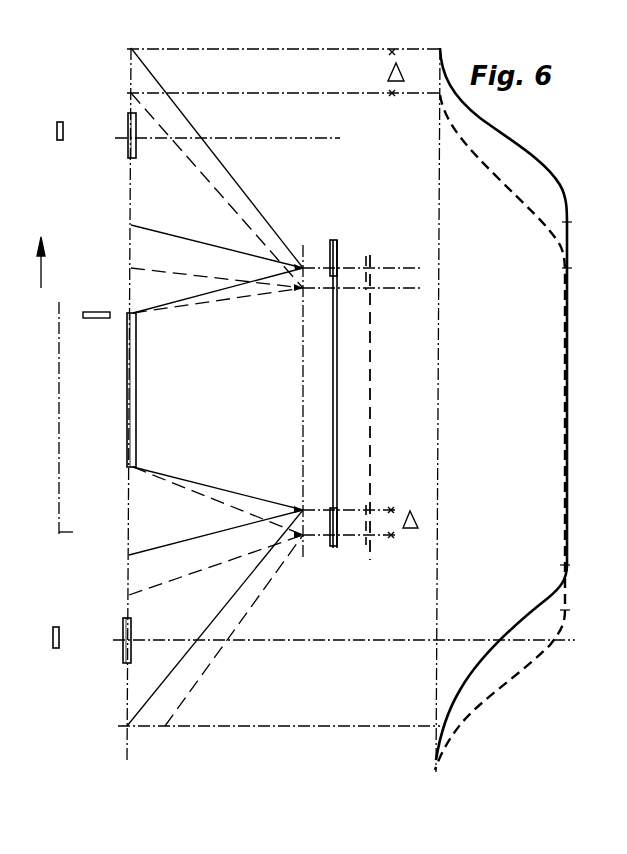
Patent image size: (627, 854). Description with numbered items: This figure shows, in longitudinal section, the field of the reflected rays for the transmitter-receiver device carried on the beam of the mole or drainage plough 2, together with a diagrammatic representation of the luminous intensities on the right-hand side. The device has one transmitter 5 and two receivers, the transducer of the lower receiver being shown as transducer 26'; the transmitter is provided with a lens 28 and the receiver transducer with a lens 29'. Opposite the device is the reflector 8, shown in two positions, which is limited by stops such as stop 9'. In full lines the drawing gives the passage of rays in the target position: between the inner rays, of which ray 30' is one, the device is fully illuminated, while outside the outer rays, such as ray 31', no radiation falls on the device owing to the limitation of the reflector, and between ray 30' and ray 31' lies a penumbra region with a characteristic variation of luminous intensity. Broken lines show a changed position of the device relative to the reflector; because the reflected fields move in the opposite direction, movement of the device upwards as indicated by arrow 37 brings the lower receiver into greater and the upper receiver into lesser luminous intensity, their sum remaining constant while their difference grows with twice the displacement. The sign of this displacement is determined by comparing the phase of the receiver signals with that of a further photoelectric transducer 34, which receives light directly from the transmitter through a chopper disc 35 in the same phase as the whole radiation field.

The mole or drainage plough 2 is at (374, 75).
The transmitter 5 is at (52, 410).
The reflector 8 is at (337, 388).
The stop of the reflector 9' is at (348, 552).
The transducer of the receiver 26' is at (68, 661).
The lens 28 is at (137, 412).
The lens 29' is at (157, 634).
The ray 30' is at (180, 563).
The ray 31' is at (232, 666).
The further photoelectric transducer 34 is at (97, 320).
The chopper disc 35 is at (82, 533).
The arrow 37 is at (41, 270).